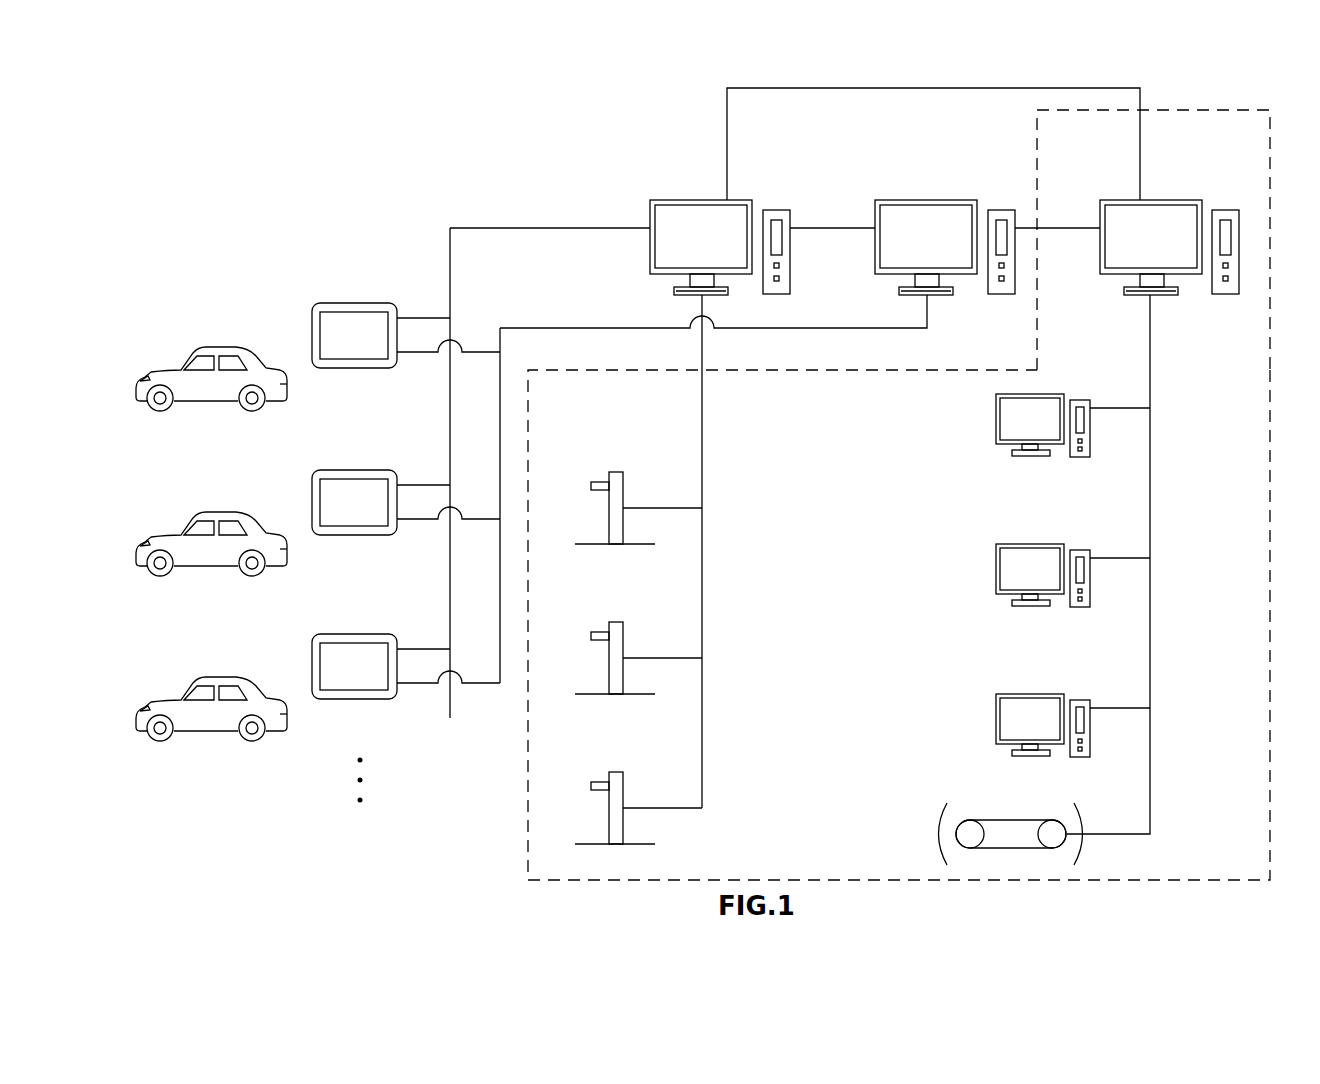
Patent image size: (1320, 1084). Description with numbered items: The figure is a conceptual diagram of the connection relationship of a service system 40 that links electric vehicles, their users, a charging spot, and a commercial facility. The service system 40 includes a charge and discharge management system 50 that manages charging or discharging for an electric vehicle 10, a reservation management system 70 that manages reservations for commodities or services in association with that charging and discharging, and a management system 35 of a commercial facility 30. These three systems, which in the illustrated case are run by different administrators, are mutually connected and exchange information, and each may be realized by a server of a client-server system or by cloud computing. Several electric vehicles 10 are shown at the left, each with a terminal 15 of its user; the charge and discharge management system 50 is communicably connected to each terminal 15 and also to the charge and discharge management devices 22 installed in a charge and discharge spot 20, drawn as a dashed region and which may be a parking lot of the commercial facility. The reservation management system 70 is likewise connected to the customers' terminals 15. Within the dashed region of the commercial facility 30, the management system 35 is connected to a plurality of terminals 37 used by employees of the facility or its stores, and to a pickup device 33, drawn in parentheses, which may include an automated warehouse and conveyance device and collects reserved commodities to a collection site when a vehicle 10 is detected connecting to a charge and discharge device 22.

The electric vehicle 10 is at (215, 345).
The terminal of a user 15 is at (350, 303).
The charge and discharge spot 20 is at (684, 468).
The charge and discharge management device 22 is at (617, 472).
The commercial facility 30 is at (1037, 143).
The pickup device 33 is at (1000, 820).
The management system 35 is at (1168, 200).
The terminal 37 is at (1058, 394).
The service system 40 is at (575, 153).
The charge and discharge management system 50 is at (676, 200).
The reservation management system 70 is at (901, 200).